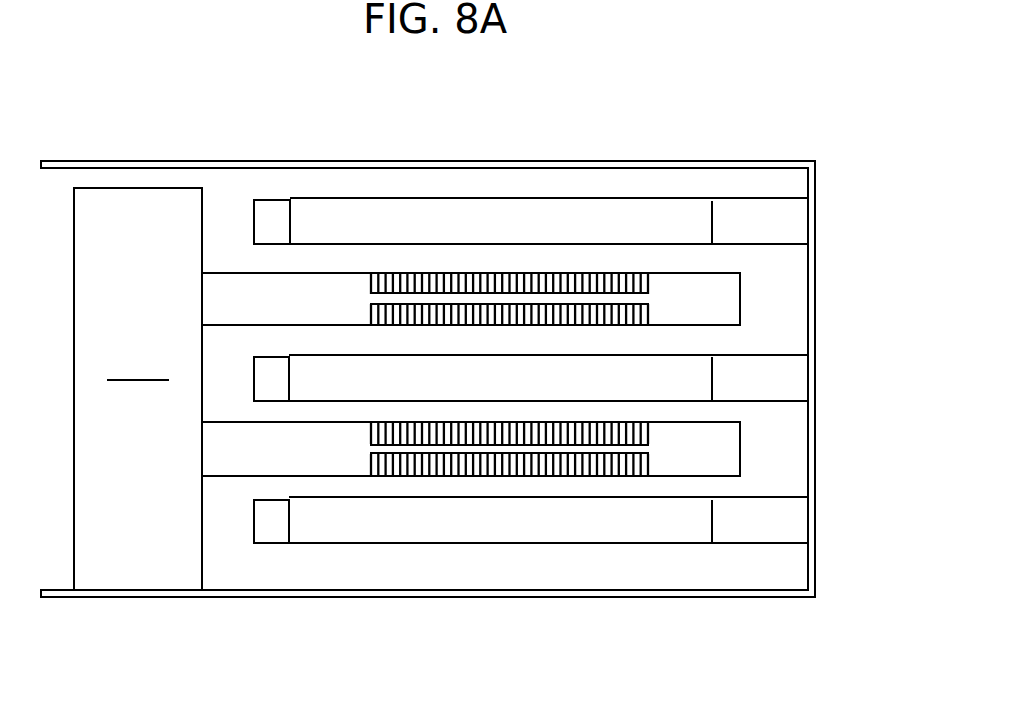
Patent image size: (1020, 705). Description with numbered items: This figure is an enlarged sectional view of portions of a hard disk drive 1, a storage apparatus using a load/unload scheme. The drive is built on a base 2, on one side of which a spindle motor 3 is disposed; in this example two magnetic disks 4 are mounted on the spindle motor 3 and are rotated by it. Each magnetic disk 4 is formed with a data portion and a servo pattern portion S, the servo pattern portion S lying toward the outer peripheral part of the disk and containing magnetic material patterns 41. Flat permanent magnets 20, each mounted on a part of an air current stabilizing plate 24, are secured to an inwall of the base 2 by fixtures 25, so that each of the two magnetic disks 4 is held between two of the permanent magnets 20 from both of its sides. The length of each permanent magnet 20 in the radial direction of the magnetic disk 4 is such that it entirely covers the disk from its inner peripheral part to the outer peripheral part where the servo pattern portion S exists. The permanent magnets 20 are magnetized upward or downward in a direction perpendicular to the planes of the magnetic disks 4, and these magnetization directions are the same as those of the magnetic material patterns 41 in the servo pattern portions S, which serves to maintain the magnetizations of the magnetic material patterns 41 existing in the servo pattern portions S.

The hard disk drive 1 is at (564, 119).
The base 2 is at (760, 600).
The spindle motor 3 is at (138, 548).
The magnetic disk 4 is at (742, 302).
The permanent magnet 20 is at (427, 200).
The air current stabilizing plate 24 is at (270, 230).
The fixture 25 is at (755, 220).
The magnetic material pattern 41 is at (557, 477).
The servo pattern portion S is at (502, 476).